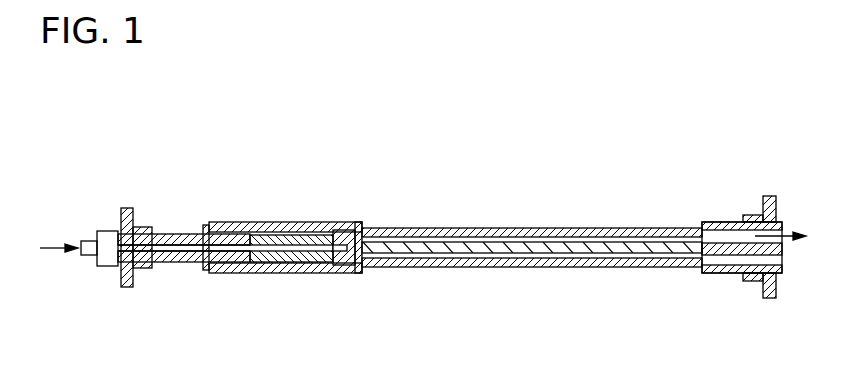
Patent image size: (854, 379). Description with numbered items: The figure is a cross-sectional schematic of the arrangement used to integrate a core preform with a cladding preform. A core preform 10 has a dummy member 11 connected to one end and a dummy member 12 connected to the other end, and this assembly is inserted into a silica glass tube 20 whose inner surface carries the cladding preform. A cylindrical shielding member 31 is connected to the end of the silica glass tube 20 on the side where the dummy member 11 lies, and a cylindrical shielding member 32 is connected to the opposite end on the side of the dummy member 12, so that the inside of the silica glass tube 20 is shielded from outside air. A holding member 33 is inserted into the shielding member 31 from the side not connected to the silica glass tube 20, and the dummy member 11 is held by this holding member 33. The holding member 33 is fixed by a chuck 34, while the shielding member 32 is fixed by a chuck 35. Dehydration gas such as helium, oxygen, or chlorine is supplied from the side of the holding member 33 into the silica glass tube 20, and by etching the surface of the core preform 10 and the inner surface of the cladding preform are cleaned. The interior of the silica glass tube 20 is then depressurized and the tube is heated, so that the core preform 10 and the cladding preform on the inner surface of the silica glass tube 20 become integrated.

The core preform 10 is at (533, 253).
The dummy member 11 is at (392, 252).
The dummy member 12 is at (728, 255).
The silica glass tube 20 is at (460, 228).
The shielding member 31 is at (303, 226).
The shielding member 32 is at (723, 226).
The holding member 33 is at (180, 240).
The chuck 34 is at (128, 275).
The chuck 35 is at (768, 200).